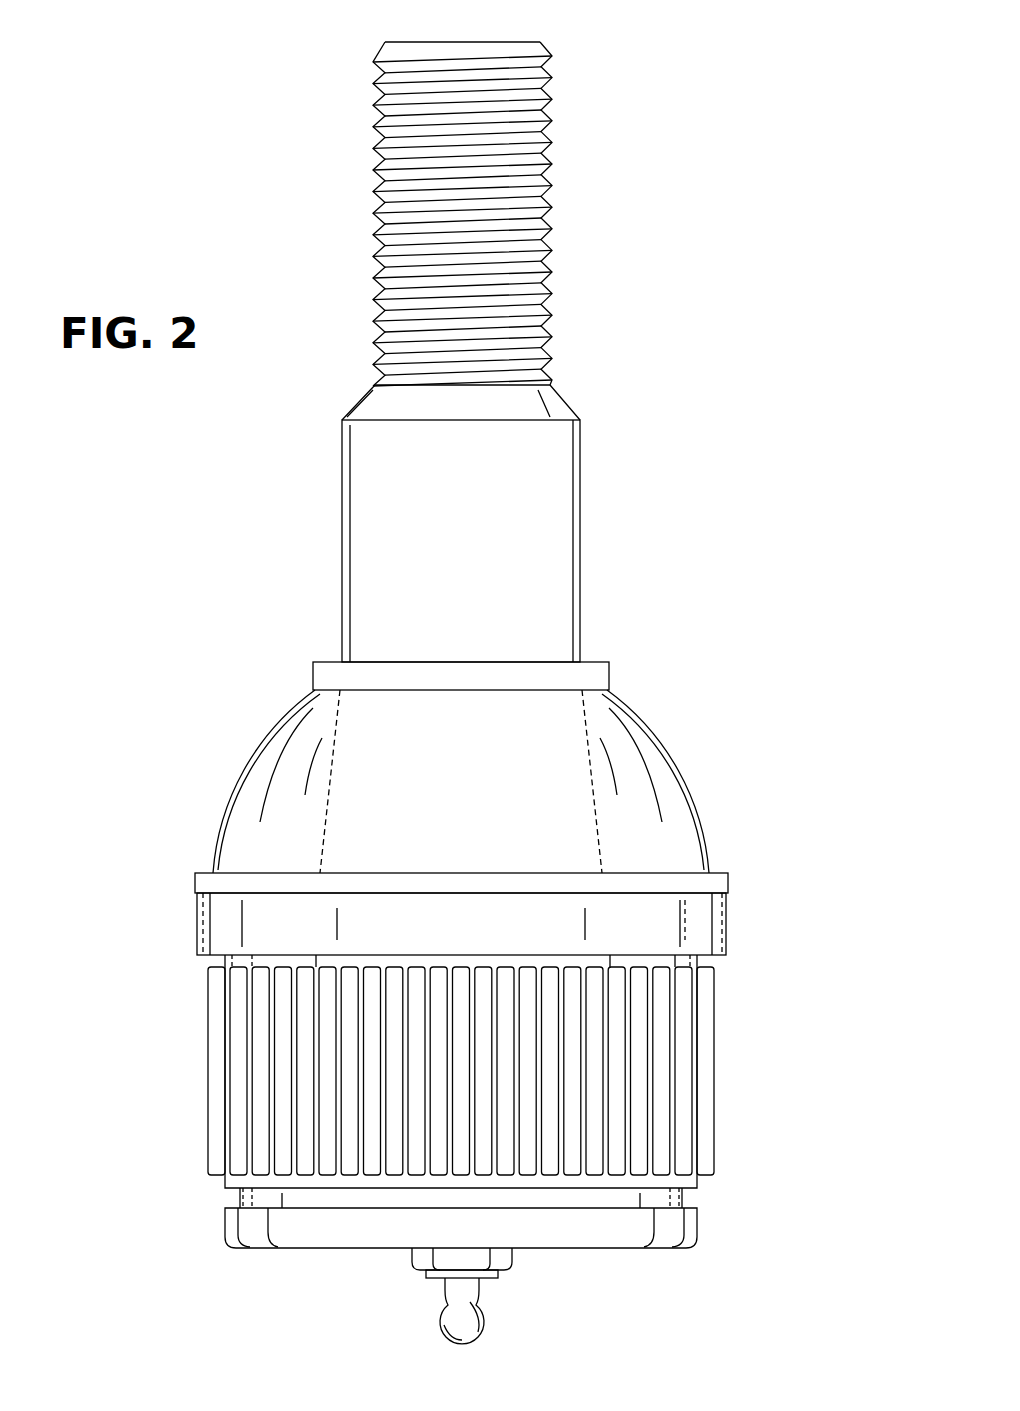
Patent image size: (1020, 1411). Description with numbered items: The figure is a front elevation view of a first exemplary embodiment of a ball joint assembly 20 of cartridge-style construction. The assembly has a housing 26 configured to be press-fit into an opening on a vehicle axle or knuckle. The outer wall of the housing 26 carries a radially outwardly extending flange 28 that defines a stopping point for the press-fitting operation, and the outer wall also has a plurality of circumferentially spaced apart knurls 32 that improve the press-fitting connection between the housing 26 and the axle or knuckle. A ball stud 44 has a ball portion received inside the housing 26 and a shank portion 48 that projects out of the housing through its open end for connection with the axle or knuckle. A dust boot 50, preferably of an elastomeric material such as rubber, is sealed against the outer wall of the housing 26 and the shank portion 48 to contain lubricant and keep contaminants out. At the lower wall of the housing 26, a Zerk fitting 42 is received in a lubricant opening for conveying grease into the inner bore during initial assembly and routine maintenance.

The ball joint assembly 20 is at (714, 487).
The ball stud 44 is at (583, 385).
The shank portion 48 is at (413, 511).
The dust boot 50 is at (650, 737).
The radially outwardly extending flange 28 is at (698, 920).
The knurls 32 is at (282, 1055).
The housing 26 is at (274, 1271).
The Zerk fitting 42 is at (486, 1322).